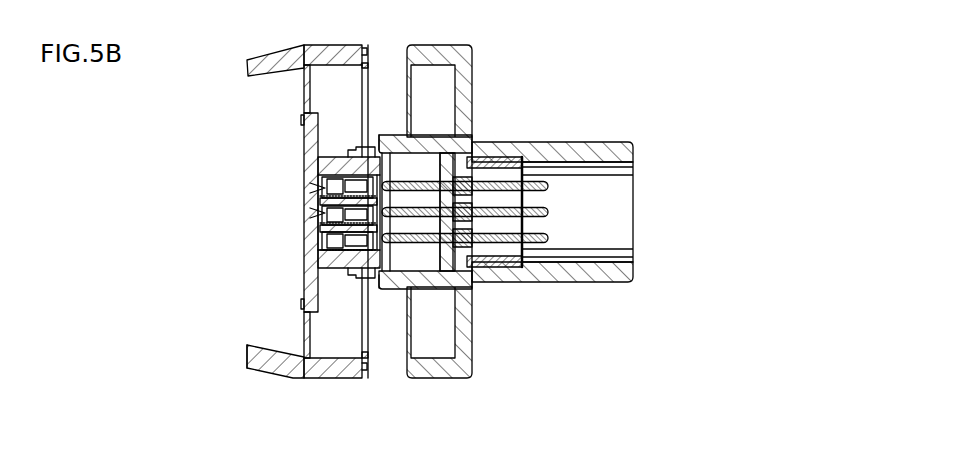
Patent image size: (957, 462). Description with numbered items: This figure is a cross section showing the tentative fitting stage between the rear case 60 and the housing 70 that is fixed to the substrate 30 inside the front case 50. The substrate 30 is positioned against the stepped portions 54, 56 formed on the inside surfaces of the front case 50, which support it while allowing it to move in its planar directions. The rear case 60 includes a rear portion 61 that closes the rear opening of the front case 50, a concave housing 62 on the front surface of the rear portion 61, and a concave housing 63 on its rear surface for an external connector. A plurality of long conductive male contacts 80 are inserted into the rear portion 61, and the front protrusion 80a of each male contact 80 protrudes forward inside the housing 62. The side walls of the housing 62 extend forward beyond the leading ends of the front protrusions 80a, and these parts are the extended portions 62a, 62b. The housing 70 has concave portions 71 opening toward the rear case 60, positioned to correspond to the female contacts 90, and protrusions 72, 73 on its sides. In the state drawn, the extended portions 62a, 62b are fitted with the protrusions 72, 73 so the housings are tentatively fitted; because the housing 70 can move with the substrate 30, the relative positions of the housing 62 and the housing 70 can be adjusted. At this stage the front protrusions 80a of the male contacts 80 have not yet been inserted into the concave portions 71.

The substrate 30 is at (313, 147).
The front case 50 is at (272, 381).
The stepped portion 54 is at (303, 88).
The stepped portion 56 is at (303, 333).
The rear case 60 is at (521, 69).
The rear portion 61 is at (462, 337).
The housing 62 is at (391, 308).
The extended portion 62a is at (393, 134).
The extended portion 62b is at (363, 364).
The housing 63 is at (580, 280).
The housing 70 is at (340, 145).
The concave portion 71 is at (318, 258).
The protrusion 72 is at (353, 145).
The protrusion 73 is at (353, 280).
The male contact 80 is at (408, 248).
The front protrusion 80a is at (418, 205).
The female contact 90 is at (330, 184).